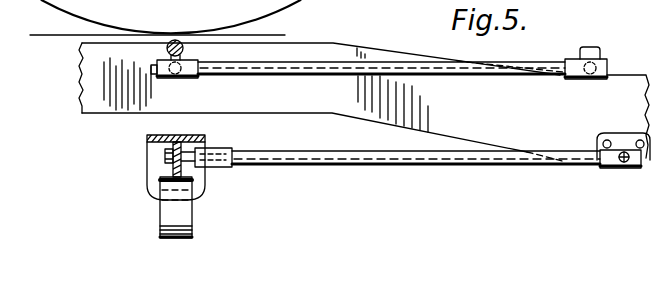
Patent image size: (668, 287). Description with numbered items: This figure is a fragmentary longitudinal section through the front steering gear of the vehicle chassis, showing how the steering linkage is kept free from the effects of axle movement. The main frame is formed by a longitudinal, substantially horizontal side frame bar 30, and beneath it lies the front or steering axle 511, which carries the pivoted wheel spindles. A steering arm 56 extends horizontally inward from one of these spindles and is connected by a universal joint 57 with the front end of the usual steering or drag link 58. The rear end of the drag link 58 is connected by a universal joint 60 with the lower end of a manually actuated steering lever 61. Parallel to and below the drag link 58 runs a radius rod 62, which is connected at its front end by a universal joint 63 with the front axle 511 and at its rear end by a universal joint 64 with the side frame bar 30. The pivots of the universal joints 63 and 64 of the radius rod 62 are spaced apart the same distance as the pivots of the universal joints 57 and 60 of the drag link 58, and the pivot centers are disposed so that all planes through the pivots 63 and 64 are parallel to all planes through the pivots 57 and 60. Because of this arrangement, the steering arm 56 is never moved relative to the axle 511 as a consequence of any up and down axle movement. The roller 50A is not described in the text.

The roller 50A is at (40, 2).
The side frame bar 30 is at (364, 93).
The steering or drag link 58 is at (326, 61).
The universal joint 57 is at (157, 62).
The steering arm 56 is at (184, 48).
The universal joint 60 is at (602, 66).
The steering lever 61 is at (601, 53).
The universal joint 64 is at (622, 150).
The radius rod 62 is at (380, 166).
The universal joint 63 is at (217, 151).
The front or steering axle 511 is at (147, 134).